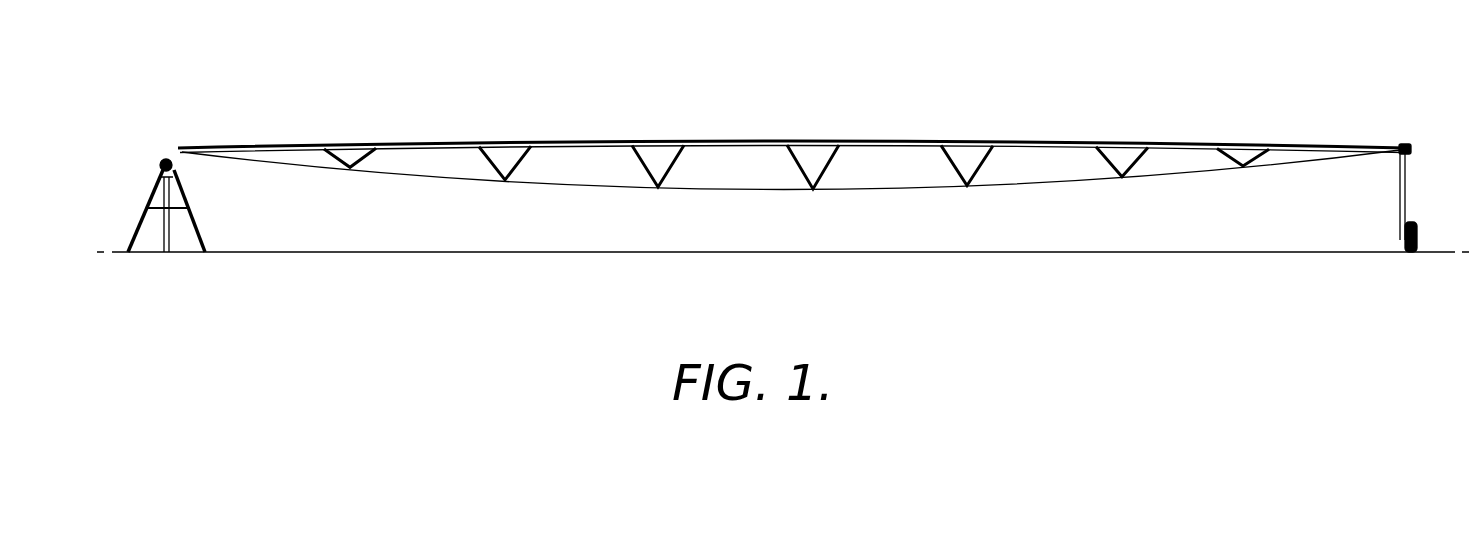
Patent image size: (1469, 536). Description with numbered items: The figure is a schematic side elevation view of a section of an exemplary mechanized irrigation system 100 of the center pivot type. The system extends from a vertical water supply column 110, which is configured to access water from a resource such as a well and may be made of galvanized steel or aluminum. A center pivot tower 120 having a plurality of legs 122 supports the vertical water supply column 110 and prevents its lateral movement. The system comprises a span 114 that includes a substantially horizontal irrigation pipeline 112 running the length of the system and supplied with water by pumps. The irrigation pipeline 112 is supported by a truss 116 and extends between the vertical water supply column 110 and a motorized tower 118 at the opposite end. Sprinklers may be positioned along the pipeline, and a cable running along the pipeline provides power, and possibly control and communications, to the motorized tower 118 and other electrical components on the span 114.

The mechanized irrigation system 100 is at (1070, 45).
The vertical water supply column 110 is at (178, 232).
The horizontal irrigation pipeline 112 is at (1170, 145).
The span 114 is at (860, 128).
The truss 116 is at (1033, 187).
The motorized tower 118 is at (1418, 237).
The center pivot tower 120 is at (150, 195).
The legs 122 is at (194, 210).